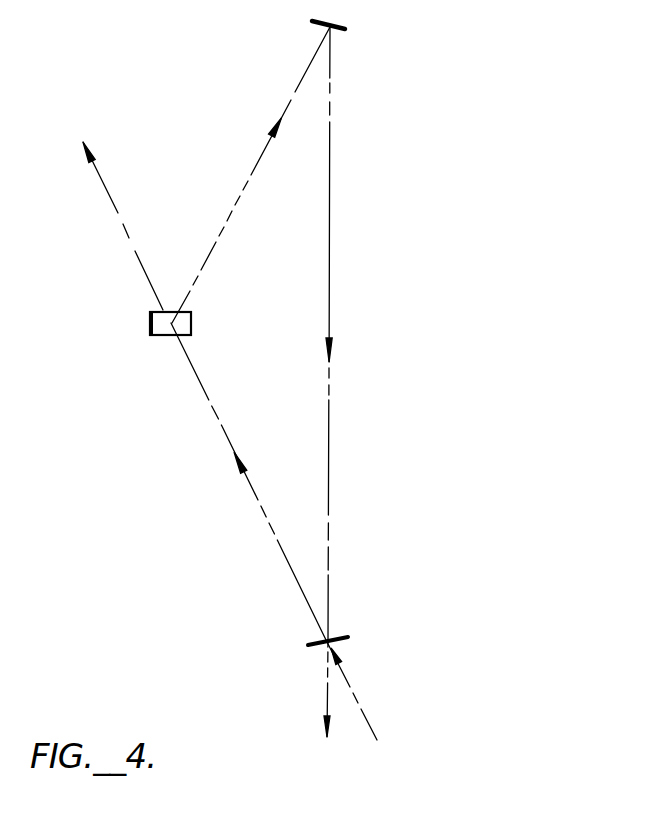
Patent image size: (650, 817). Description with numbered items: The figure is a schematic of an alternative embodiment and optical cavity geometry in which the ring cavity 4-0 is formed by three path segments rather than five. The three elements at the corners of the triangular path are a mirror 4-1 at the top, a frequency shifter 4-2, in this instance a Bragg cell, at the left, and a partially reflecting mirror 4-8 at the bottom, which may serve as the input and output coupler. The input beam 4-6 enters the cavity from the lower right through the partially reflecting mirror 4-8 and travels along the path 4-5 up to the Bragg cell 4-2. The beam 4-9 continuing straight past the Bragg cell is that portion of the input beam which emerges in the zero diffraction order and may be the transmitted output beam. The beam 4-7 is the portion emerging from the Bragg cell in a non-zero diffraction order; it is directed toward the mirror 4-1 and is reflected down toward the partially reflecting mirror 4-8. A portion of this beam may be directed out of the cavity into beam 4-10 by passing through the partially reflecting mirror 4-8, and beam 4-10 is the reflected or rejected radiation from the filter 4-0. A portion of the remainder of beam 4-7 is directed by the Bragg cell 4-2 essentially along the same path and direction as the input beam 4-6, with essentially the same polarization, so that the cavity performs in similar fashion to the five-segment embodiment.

The ring cavity 4-0 is at (497, 87).
The mirror 4-1 is at (337, 32).
The frequency shifter 4-2 is at (162, 337).
The light ray 4-5 is at (231, 441).
The input beam 4-6 is at (368, 726).
The beam 4-7 is at (330, 142).
The partially reflecting mirror 4-8 is at (343, 638).
The beam 4-9 is at (135, 247).
The beam 4-10 is at (327, 690).